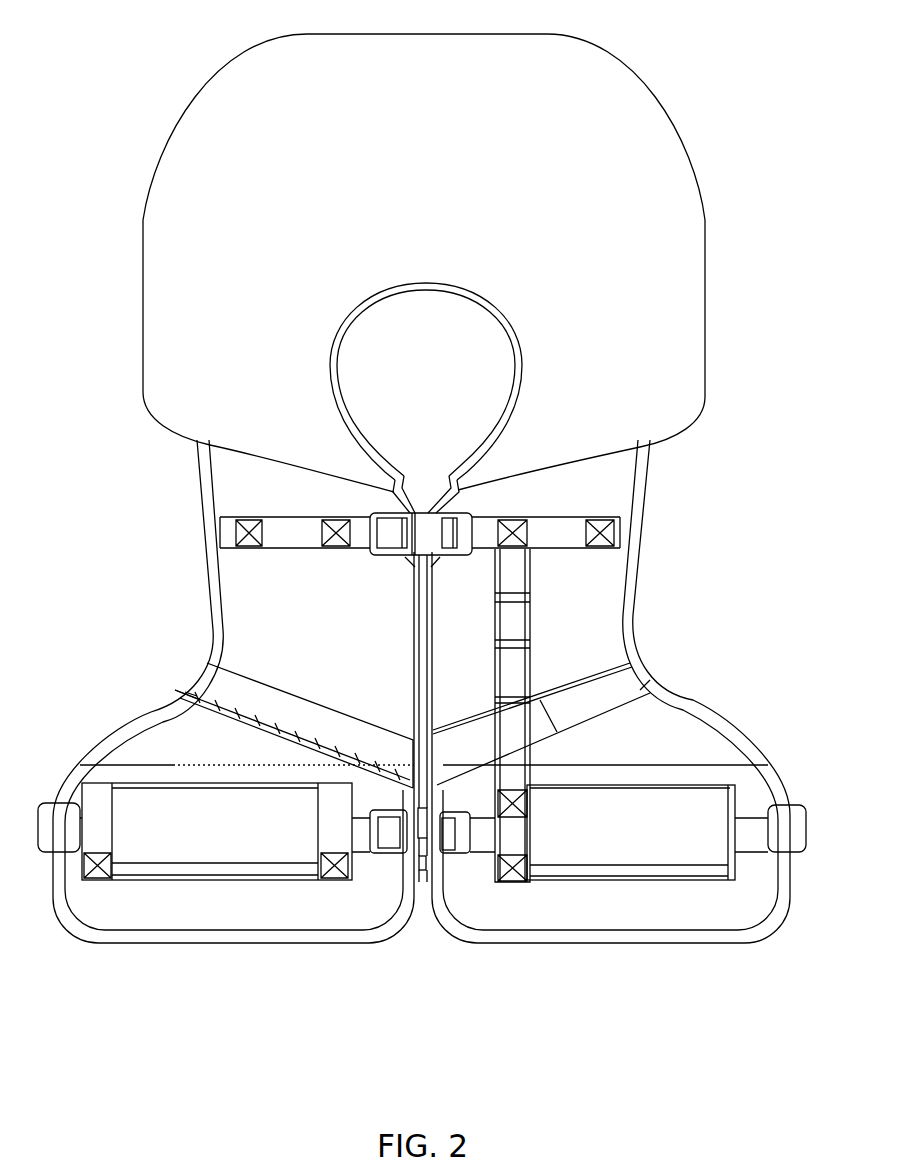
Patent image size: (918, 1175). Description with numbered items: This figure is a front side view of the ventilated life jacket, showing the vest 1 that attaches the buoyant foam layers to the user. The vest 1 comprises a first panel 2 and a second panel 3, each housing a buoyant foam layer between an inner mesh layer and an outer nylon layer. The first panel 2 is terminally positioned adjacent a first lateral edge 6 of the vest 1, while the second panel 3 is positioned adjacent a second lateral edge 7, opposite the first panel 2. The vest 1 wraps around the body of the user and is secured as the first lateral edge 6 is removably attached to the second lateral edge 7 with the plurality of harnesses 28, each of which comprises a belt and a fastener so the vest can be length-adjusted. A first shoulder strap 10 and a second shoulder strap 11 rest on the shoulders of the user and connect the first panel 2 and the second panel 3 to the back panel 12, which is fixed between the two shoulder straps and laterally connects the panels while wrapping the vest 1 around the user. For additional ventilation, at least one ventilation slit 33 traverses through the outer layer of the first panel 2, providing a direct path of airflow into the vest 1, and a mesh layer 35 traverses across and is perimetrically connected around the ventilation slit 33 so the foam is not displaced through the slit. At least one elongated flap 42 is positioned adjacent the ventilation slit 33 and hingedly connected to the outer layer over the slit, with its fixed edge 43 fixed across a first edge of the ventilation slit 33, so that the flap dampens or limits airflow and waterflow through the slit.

The vest 1 is at (222, 70).
The back panel 12 is at (362, 348).
The first shoulder strap 10 is at (213, 503).
The second shoulder strap 11 is at (638, 490).
The first panel 2 is at (220, 630).
The second panel 3 is at (630, 617).
The first lateral edge 6 is at (420, 655).
The second lateral edge 7 is at (428, 655).
The plurality of harnesses 28 is at (372, 551).
The elongated flap 42 is at (195, 675).
The fixed edge 43 is at (318, 700).
The ventilation slit 33 is at (177, 692).
The mesh layer 35 is at (187, 703).